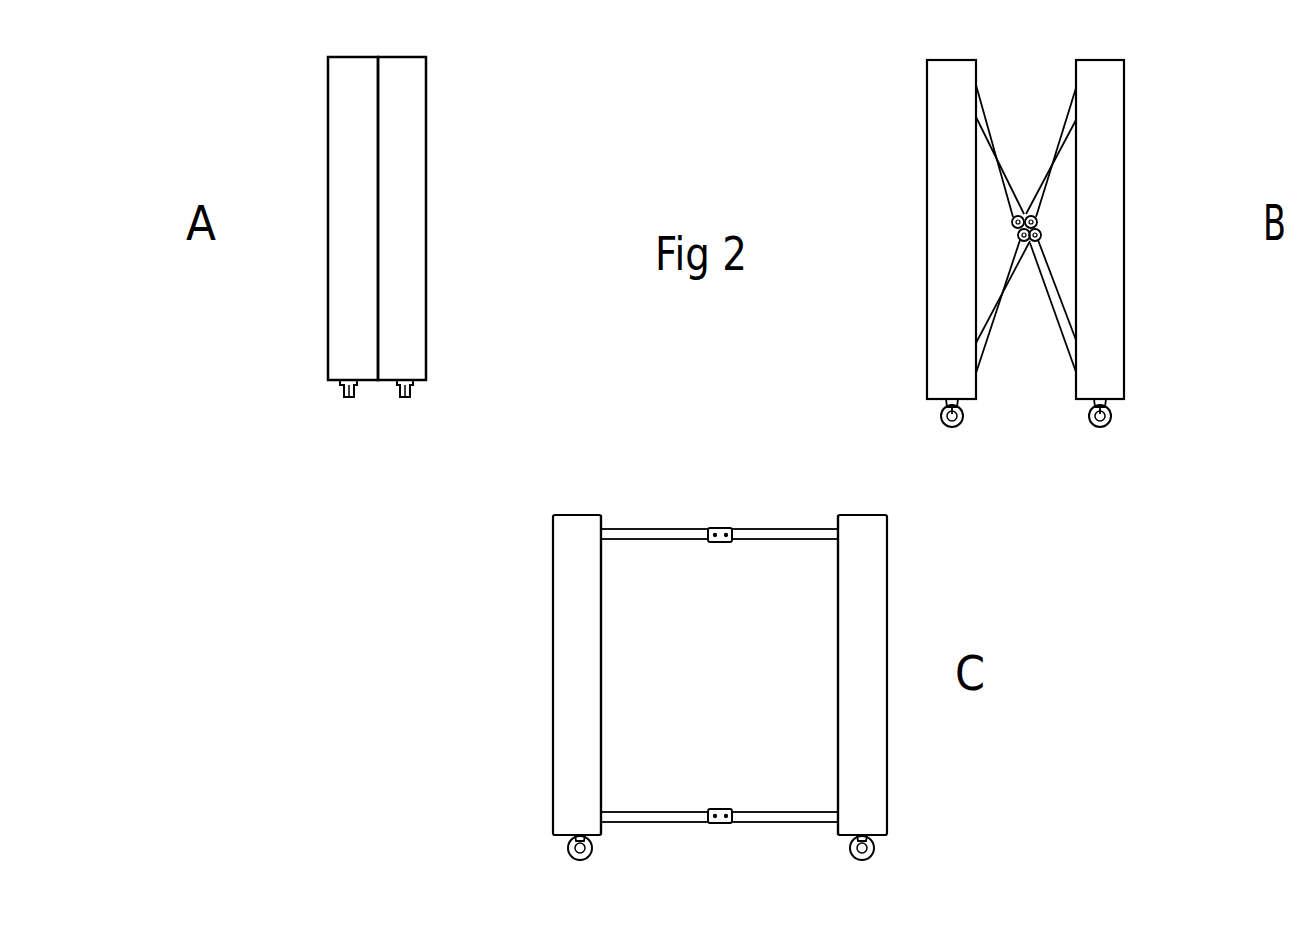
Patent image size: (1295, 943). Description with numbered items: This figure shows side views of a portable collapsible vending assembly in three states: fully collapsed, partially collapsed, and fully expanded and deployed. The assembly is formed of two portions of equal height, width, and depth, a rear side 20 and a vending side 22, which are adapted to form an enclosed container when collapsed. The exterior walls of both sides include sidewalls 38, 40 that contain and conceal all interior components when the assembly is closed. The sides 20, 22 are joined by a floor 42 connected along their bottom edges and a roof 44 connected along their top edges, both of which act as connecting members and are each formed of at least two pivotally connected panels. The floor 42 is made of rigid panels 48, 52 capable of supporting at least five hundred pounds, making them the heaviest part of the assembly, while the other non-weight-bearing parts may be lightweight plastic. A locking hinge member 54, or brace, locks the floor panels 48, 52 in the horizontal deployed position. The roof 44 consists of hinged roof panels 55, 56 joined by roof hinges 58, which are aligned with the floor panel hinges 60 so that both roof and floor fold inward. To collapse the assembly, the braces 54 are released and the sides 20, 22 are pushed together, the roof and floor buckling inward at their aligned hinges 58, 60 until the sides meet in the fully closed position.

In FIG. 2A, the rear side 20 is at (323, 281).
In FIG. 2B, the rear side 20 is at (937, 268).
In FIG. 2C, the rear side 20 is at (560, 678).
In FIG. 2A, the vending side 22 is at (428, 281).
In FIG. 2B, the vending side 22 is at (1113, 233).
In FIG. 2C, the vending side 22 is at (875, 762).
In FIG. 2C, the sidewall 38 is at (570, 633).
In FIG. 2C, the sidewall 40 is at (853, 663).
In FIG. 2C, the floor 42 is at (719, 821).
In FIG. 2C, the roof 44 is at (719, 528).
In FIG. 2C, the floor panel 48 is at (633, 818).
In FIG. 2C, the floor panel 52 is at (758, 818).
In FIG. 2C, the locking hinge member 54 is at (720, 809).
In FIG. 2C, the roof panel 55 is at (615, 532).
In FIG. 2C, the roof panel 56 is at (772, 528).
In FIG. 2B, the roof hinge 58 is at (1023, 214).
In FIG. 2C, the roof hinge 58 is at (720, 542).
In FIG. 2B, the floor panel hinge 60 is at (1030, 244).